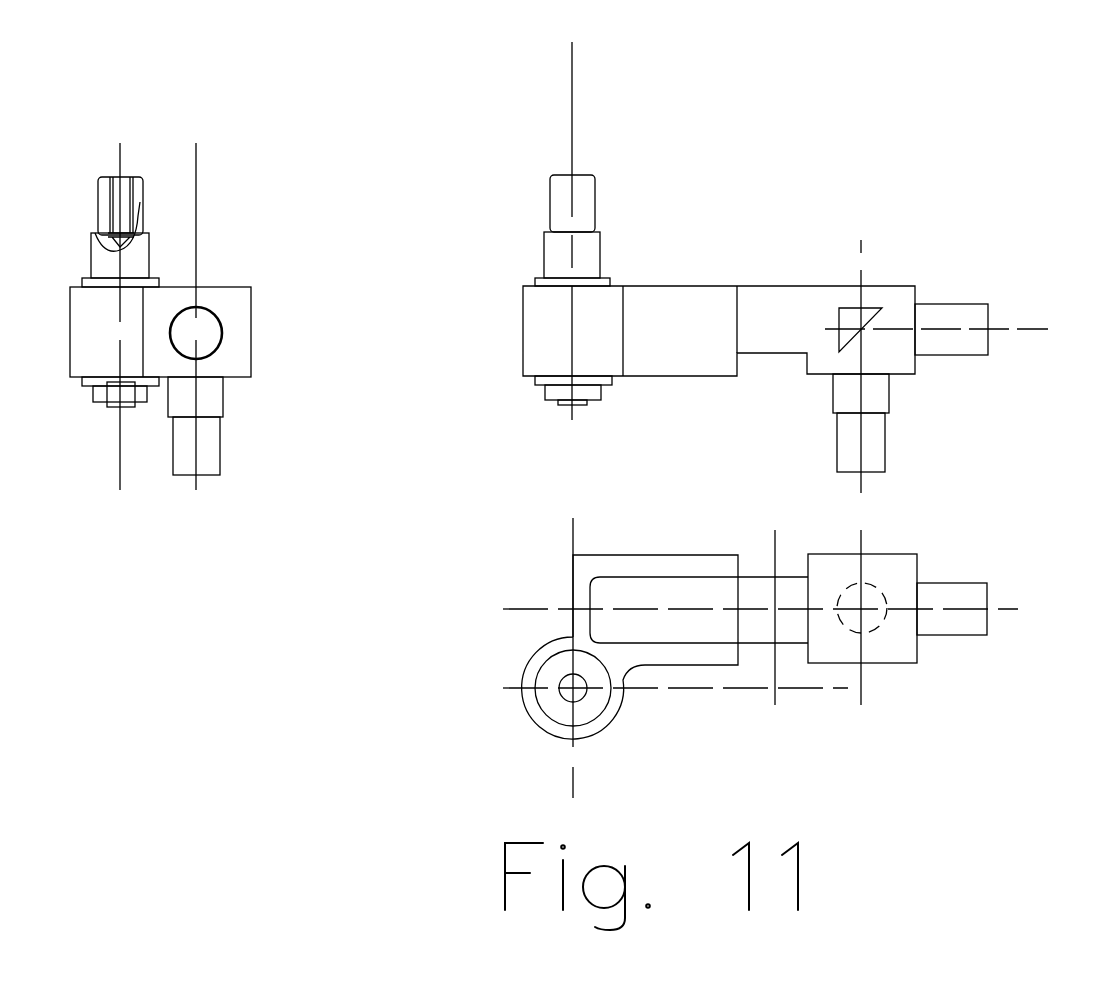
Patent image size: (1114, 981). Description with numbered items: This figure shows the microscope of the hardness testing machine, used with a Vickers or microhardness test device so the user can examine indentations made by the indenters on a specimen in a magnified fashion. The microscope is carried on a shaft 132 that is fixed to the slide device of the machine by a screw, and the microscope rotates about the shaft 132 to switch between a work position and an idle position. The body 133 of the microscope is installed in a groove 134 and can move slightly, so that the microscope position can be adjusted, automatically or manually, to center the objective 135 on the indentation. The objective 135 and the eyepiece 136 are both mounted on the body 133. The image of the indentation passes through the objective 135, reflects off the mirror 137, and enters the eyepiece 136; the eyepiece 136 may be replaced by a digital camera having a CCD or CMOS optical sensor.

The shaft 132 is at (140, 202).
The body 133 is at (765, 585).
The groove 134 is at (660, 577).
The objective 135 is at (873, 452).
The eyepiece 136 is at (970, 313).
The mirror 137 is at (870, 323).